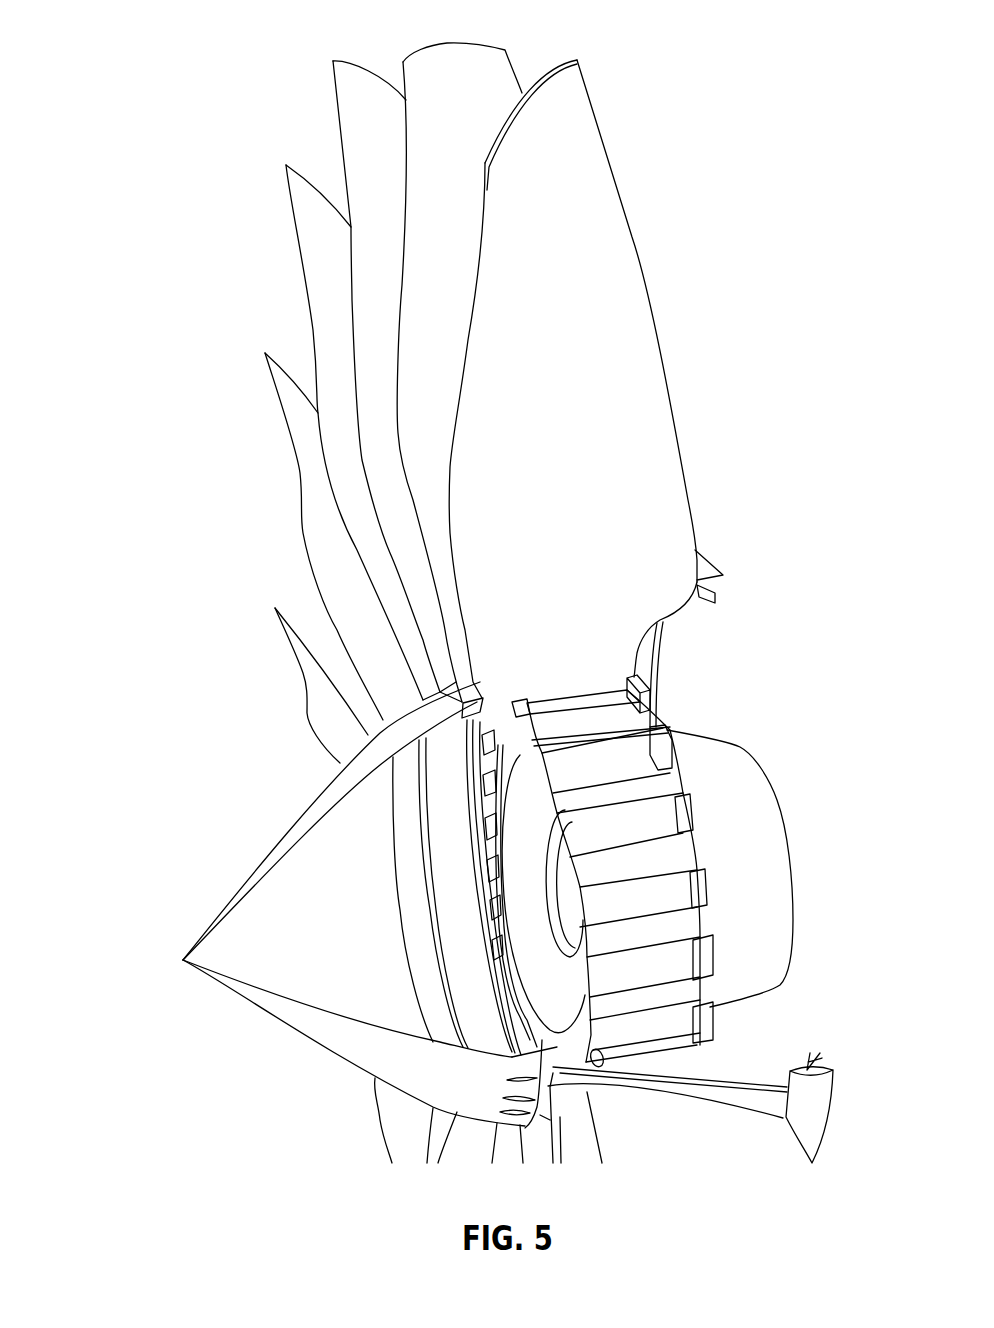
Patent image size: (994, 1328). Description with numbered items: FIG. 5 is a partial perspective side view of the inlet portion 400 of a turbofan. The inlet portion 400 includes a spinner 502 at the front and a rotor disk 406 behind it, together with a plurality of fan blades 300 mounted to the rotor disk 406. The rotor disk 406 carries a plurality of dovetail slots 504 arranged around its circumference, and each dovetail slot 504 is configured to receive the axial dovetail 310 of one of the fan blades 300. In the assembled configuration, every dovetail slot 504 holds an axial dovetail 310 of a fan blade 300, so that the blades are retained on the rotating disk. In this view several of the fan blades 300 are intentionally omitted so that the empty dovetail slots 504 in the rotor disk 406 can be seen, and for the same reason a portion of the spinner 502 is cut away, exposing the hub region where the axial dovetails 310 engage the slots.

The fan blade 300 is at (286, 165).
The axial dovetail 310 is at (547, 700).
The inlet portion 400 is at (118, 124).
The rotor disk 406 is at (728, 975).
The spinner 502 is at (253, 870).
The dovetail slot 504 is at (643, 713).